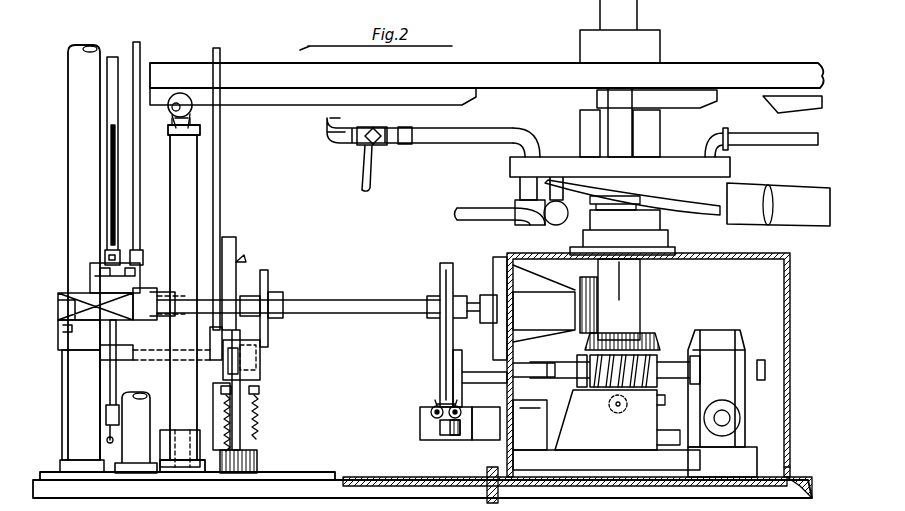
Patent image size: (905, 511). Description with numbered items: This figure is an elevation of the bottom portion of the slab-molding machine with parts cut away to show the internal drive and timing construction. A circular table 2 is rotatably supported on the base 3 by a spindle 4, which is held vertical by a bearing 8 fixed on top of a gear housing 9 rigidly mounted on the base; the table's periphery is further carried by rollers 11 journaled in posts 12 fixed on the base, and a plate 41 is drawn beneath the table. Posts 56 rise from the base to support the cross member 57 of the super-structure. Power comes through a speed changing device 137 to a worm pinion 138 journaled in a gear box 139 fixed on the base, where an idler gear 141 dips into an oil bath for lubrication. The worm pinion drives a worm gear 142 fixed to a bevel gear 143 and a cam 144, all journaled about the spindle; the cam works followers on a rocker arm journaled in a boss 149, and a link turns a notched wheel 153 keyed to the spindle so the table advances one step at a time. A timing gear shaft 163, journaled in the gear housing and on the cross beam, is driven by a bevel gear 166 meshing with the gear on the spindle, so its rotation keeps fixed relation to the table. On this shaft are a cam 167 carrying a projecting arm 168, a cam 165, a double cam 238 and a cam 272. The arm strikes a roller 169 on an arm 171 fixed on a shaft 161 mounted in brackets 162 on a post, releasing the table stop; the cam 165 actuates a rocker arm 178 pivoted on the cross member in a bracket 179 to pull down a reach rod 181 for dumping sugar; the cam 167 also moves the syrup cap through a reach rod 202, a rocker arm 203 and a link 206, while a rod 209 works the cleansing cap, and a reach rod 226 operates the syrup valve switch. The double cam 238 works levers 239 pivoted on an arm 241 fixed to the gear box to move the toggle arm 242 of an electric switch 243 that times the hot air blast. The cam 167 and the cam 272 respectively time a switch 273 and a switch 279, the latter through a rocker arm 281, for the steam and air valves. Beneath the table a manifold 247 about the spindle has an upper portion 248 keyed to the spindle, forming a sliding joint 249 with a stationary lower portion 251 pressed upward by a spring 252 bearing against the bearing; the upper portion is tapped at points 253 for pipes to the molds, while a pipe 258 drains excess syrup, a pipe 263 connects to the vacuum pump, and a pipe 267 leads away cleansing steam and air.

The circular table 2 is at (736, 80).
The base 3 is at (100, 229).
The spindle 4 is at (632, 10).
The bearing 8 is at (585, 237).
The gear housing 9 is at (740, 255).
The rollers 11 is at (198, 110).
The posts 12 is at (178, 190).
The table plate 41 is at (262, 95).
The posts 56 is at (80, 105).
The cross member 57 is at (70, 340).
The speed changing device 137 is at (728, 330).
The worm pinion 138 is at (652, 360).
The gear box 139 is at (572, 450).
The idler gear 141 is at (616, 425).
The worm gear 142 is at (535, 363).
The bevel gear 143 is at (645, 342).
The cam 144 is at (649, 420).
The boss 149 is at (530, 430).
The notched wheel 153 is at (690, 457).
The shaft 161 is at (114, 60).
The brackets 162 is at (72, 378).
The timing gear shaft 163 is at (338, 305).
The cam 165 is at (150, 287).
The bevel gear 166 is at (588, 300).
The cam 167 is at (233, 238).
The projecting arm 168 is at (240, 262).
The roller 169 is at (260, 372).
The arm 171 is at (160, 355).
The rocker arm 178 is at (153, 262).
The bracket 179 is at (75, 293).
The reach rod 181 is at (137, 125).
The reach rod 202 is at (118, 325).
The rocker arm 203 is at (163, 430).
The link 206 is at (218, 423).
The rod 209 is at (222, 160).
The reach rod 226 is at (113, 152).
The double cam 238 is at (440, 263).
The levers 239 is at (432, 408).
The arm 241 is at (486, 375).
The toggle arm 242 is at (432, 418).
The electric switch 243 is at (446, 440).
The manifold 247 is at (505, 170).
The upper portion 248 is at (549, 160).
The sliding joint 249 is at (665, 178).
The lower portion 251 is at (712, 208).
The spring 252 is at (619, 195).
The tapped points 253 is at (712, 148).
The pipe 258 is at (540, 223).
The pipe 263 is at (762, 210).
The pipe 267 is at (456, 210).
The cam 272 is at (266, 272).
The switch 273 is at (258, 340).
The switch 279 is at (258, 353).
The rocker arm 281 is at (262, 390).